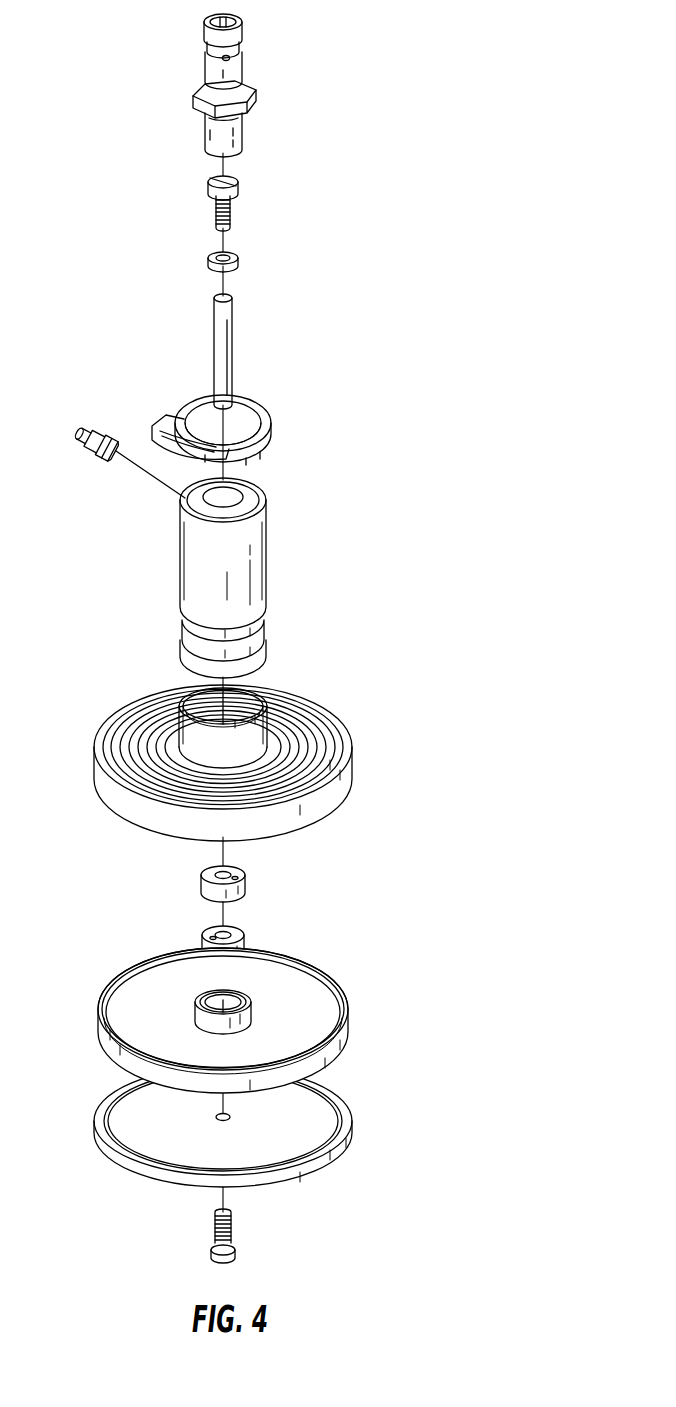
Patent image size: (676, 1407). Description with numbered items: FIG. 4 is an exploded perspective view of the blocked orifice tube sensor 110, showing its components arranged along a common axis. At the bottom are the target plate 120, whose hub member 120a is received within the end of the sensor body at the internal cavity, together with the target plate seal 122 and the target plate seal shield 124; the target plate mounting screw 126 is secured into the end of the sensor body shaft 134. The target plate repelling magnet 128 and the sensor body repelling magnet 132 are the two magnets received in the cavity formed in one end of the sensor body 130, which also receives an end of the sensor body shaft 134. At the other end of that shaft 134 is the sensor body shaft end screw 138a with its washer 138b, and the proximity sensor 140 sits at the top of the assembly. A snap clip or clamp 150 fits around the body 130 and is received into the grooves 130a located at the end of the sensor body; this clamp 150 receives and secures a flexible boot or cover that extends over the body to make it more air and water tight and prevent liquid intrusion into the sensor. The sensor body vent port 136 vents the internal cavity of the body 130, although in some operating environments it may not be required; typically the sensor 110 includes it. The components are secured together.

The sensor 110 is at (430, 522).
The target plate 120 is at (276, 1020).
The hub member 120a is at (255, 1005).
The target plate seal 122 is at (350, 712).
The target plate seal shield 124 is at (353, 1135).
The target plate mounting screw 126 is at (237, 1240).
The target plate repelling magnet 128 is at (250, 935).
The sensor body 130 is at (295, 565).
The grooves 130a is at (263, 636).
The sensor body repelling magnet 132 is at (250, 878).
The sensor body shaft 134 is at (236, 335).
The sensor body vent port 136 is at (74, 428).
The sensor body shaft end screw 138a is at (240, 183).
The washer 138b is at (243, 258).
The proximity sensor 140 is at (262, 90).
The snap clip or clamp 150 is at (277, 432).